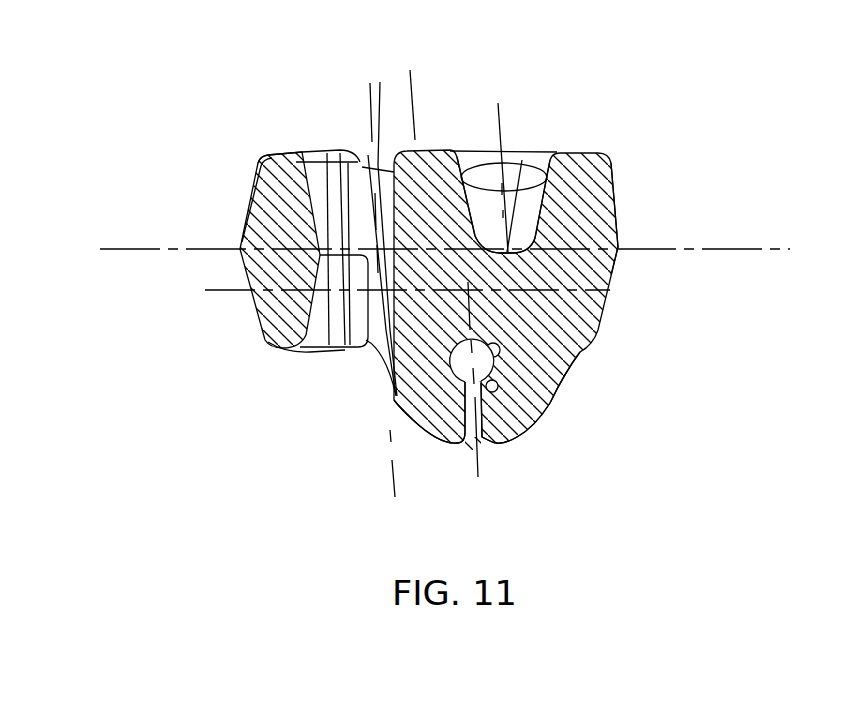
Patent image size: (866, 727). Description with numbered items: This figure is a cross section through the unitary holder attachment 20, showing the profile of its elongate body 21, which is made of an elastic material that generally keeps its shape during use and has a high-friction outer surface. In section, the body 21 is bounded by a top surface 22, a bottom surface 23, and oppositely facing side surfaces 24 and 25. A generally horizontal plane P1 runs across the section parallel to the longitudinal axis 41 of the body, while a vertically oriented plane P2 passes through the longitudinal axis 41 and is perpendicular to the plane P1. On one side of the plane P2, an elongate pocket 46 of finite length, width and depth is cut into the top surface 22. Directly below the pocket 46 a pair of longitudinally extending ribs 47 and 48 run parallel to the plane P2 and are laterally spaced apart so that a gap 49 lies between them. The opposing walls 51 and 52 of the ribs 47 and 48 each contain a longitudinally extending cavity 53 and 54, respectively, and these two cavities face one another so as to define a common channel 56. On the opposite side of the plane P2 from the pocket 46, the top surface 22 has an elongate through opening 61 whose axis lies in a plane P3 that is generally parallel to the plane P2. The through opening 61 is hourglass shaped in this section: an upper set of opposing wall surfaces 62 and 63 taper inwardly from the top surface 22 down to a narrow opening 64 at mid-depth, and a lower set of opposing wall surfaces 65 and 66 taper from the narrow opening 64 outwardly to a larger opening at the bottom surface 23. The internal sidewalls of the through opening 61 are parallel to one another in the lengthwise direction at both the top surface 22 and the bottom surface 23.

The unitary holder attachment 20 is at (606, 152).
The elongate body 21 is at (606, 177).
The top surface 22 is at (551, 158).
The bottom surface 23 is at (544, 417).
The side surface 24 is at (620, 249).
The side surface 25 is at (240, 250).
The longitudinal axis 41 is at (426, 290).
The elongate pocket 46 is at (520, 163).
The rib 47 is at (433, 443).
The rib 48 is at (513, 423).
The gap 49 is at (480, 437).
The opposing wall 51 is at (435, 420).
The opposing wall 52 is at (510, 400).
The longitudinally extending cavity 53 is at (450, 368).
The longitudinally extending cavity 54 is at (496, 355).
The common channel 56 is at (480, 370).
The elongate through opening 61 is at (340, 151).
The upper wall surface 62 is at (298, 152).
The upper wall surface 63 is at (382, 225).
The narrow opening 64 is at (320, 255).
The lower wall surface 65 is at (318, 348).
The lower wall surface 66 is at (390, 340).
The horizontal plane P1 is at (757, 249).
The vertical plane P2 is at (412, 82).
The plane of through opening axis P3 is at (372, 112).